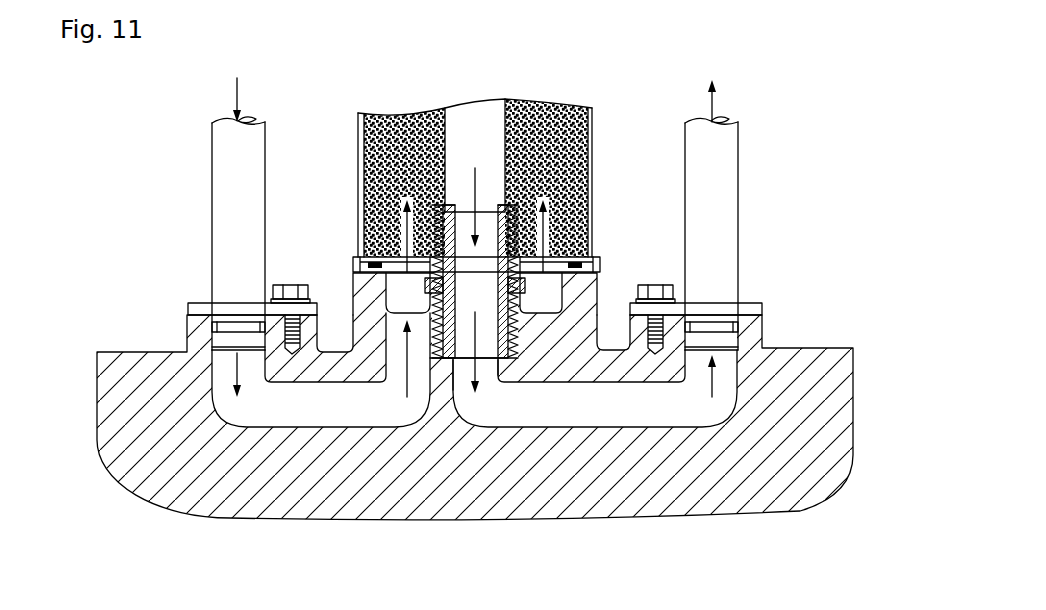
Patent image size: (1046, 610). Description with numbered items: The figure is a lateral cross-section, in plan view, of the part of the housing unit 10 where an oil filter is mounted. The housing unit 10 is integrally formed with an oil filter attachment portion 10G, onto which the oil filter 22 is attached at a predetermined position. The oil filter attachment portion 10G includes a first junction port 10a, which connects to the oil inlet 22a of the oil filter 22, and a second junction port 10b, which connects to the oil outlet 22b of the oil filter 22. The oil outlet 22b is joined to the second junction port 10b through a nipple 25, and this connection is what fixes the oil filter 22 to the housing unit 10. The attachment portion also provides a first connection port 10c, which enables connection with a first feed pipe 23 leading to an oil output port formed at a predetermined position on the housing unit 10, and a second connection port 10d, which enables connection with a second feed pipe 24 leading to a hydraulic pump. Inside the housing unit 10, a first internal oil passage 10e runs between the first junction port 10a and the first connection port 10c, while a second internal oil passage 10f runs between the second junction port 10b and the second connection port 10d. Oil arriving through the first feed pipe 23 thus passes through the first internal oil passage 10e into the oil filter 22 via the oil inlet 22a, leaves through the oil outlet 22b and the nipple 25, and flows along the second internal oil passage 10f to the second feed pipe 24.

The housing unit 10 is at (835, 348).
The first junction port 10a is at (398, 298).
The second junction port 10b is at (484, 378).
The first connection port 10c is at (215, 340).
The second connection port 10d is at (711, 304).
The first internal oil passage 10e is at (340, 408).
The second internal oil passage 10f is at (597, 413).
The oil filter attachment portion 10G is at (604, 274).
The oil filter 22 is at (592, 125).
The oil inlet 22a is at (398, 262).
The oil outlet 22b is at (447, 207).
The first feed pipe 23 is at (212, 190).
The second feed pipe 24 is at (738, 205).
The nipple 25 is at (510, 324).